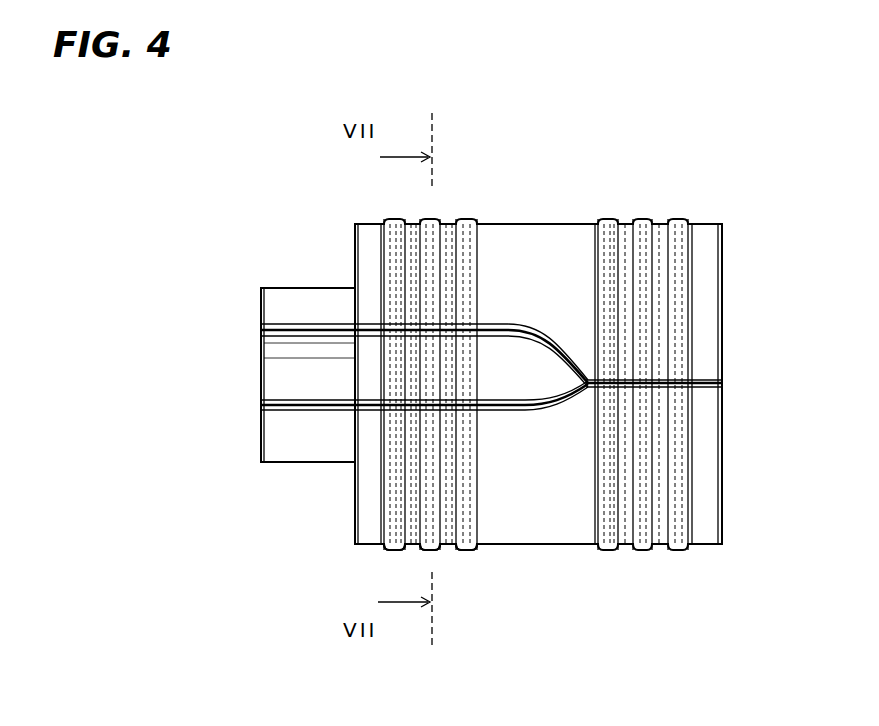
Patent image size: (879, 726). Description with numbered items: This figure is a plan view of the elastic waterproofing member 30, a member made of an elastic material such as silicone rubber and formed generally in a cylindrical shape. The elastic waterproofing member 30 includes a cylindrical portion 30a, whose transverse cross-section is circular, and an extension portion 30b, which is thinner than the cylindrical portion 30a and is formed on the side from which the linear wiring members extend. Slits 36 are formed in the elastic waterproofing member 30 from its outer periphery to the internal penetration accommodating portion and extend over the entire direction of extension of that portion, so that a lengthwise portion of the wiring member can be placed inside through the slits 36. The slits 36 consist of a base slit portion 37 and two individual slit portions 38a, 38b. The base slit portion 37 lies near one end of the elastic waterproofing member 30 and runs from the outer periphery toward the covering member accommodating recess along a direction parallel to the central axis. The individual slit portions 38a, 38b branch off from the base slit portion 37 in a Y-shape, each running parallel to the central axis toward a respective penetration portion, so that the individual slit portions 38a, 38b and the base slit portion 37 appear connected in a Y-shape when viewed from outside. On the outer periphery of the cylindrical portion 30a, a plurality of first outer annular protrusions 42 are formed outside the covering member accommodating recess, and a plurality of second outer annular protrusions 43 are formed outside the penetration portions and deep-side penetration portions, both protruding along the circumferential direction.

The elastic waterproofing member 30 is at (713, 217).
The cylindrical portion 30a is at (708, 312).
The extension portion 30b is at (300, 298).
The slits 36 is at (491, 262).
The base slit portion 37 is at (628, 379).
The individual slit portion 38a is at (395, 402).
The individual slit portion 38b is at (442, 328).
The first outer annular protrusions 42 is at (678, 217).
The second outer annular protrusions 43 is at (394, 550).